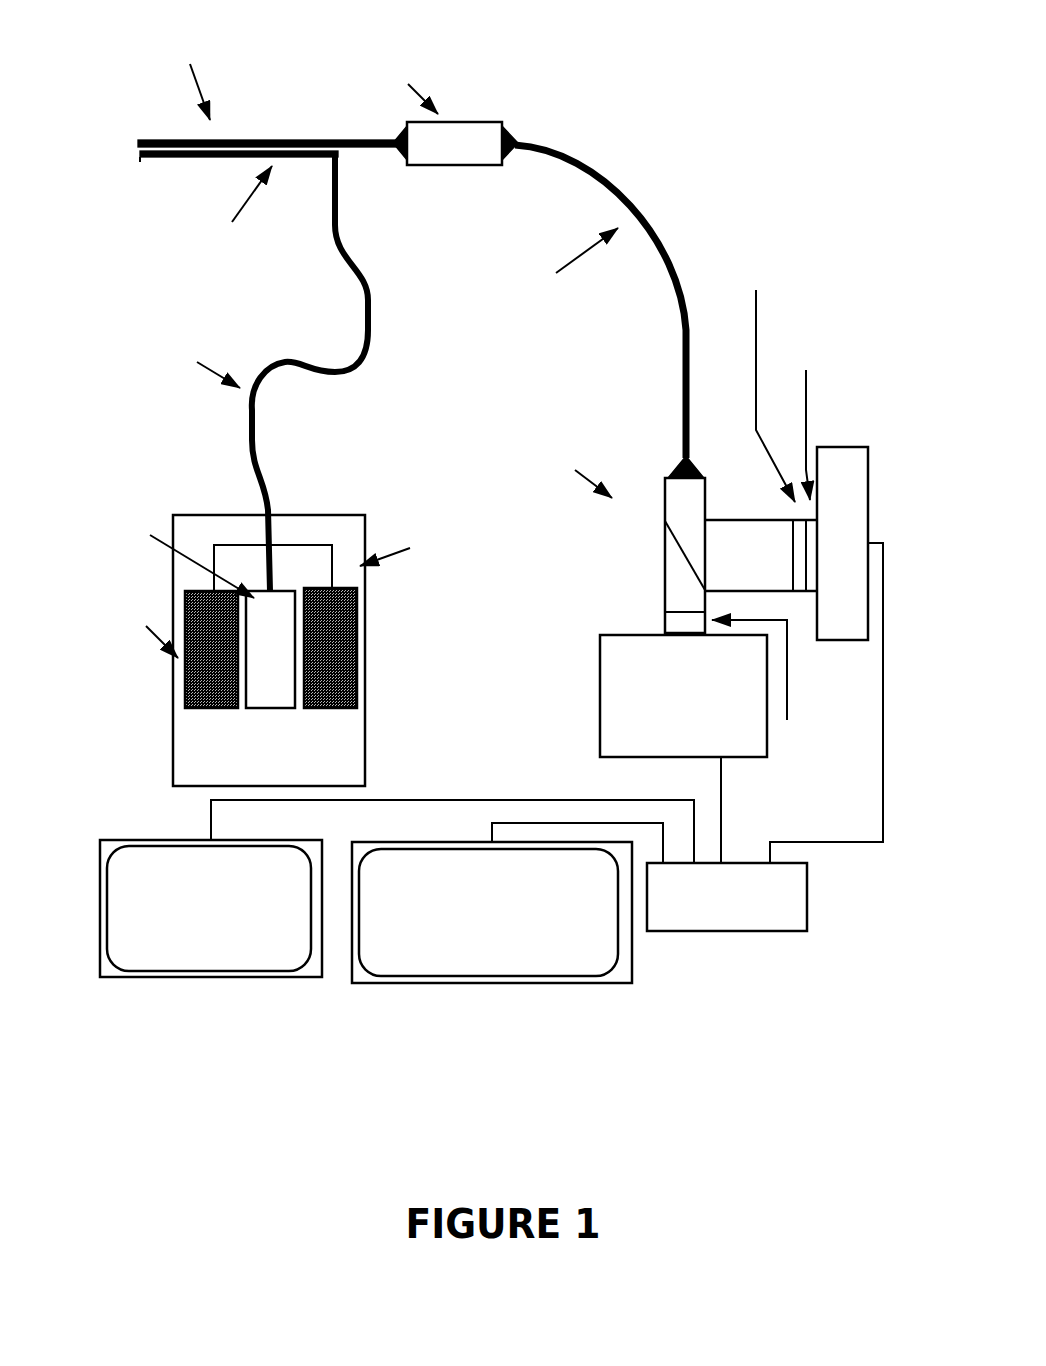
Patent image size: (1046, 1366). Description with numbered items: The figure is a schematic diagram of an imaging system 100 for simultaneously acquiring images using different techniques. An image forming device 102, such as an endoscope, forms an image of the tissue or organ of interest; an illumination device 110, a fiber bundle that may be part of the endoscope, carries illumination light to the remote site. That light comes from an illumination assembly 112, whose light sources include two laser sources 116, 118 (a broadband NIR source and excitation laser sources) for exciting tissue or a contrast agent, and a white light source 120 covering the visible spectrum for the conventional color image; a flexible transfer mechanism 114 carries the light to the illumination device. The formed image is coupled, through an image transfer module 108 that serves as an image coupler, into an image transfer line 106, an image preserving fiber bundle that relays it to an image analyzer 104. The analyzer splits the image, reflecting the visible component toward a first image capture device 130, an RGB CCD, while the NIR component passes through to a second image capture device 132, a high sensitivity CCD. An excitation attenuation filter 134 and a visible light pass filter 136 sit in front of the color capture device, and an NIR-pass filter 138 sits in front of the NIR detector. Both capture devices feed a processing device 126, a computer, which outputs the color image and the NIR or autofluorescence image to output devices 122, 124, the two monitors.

The imaging system 100 is at (783, 100).
The image forming device 102 is at (266, 140).
The image analyzer 104 is at (678, 496).
The image transfer line 106 is at (560, 158).
The image transfer module 108 is at (466, 121).
The illumination device 110 is at (140, 162).
The illumination assembly 112 is at (352, 515).
The transfer mechanism 114 is at (373, 331).
The laser source 116 is at (208, 708).
The laser source 118 is at (272, 710).
The white light source 120 is at (358, 632).
The output device 122 is at (214, 977).
The output device 124 is at (492, 983).
The processing device 126 is at (725, 931).
The first image capture device 130 is at (845, 641).
The second image capture device 132 is at (600, 722).
The excitation attenuation filter 134 is at (755, 326).
The visible light pass filter 136 is at (806, 410).
The NIR-pass filter 138 is at (665, 622).